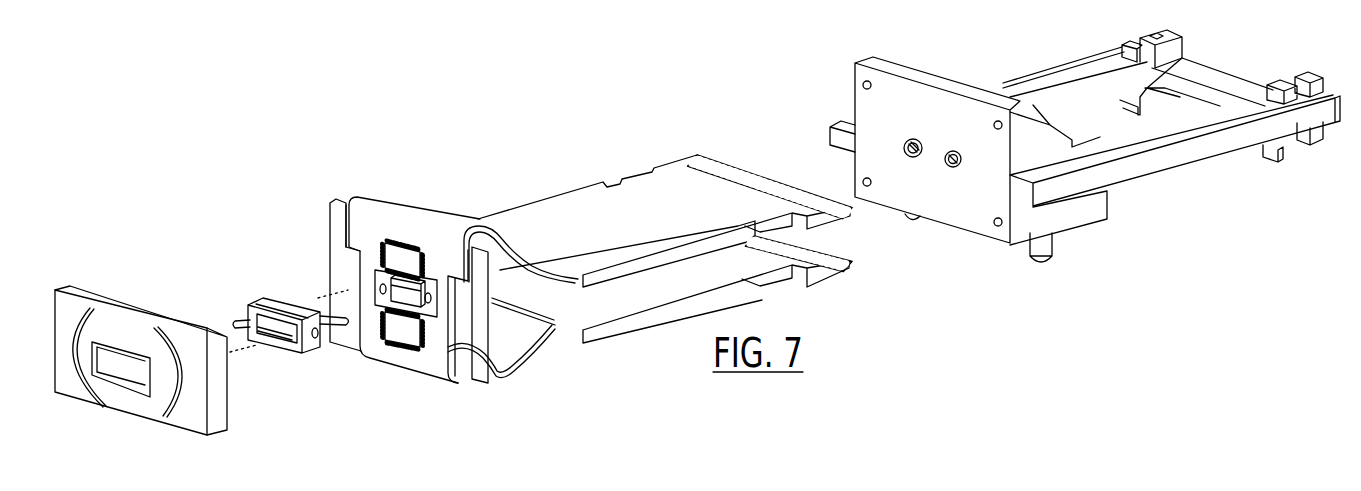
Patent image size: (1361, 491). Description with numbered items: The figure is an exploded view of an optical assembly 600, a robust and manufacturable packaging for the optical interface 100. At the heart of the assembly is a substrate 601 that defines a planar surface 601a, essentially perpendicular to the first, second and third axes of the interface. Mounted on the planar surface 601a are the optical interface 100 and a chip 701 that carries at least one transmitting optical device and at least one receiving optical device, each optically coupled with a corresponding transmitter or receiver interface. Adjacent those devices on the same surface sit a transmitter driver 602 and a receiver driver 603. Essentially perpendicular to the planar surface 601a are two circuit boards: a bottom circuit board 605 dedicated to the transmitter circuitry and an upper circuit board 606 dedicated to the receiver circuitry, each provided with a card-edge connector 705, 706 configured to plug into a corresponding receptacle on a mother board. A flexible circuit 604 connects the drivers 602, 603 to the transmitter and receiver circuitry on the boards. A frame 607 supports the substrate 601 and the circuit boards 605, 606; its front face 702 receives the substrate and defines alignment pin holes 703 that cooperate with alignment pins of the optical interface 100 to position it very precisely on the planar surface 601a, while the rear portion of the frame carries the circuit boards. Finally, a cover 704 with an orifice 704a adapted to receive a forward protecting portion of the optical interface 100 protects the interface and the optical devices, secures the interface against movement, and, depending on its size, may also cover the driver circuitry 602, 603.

The optical assembly 600 is at (688, 87).
The optical interface 100 is at (270, 297).
The substrate 601 is at (328, 232).
The planar surface 601a is at (345, 257).
The transmitter driver 602 is at (403, 333).
The receiver driver 603 is at (400, 255).
The flexible circuit 604 is at (360, 188).
The bottom circuit board 605 is at (700, 282).
The upper circuit board 606 is at (665, 200).
The frame 607 is at (962, 88).
The chip 701 is at (505, 368).
The front face 702 is at (908, 140).
The alignment pin holes 703 is at (952, 168).
The cover 704 is at (57, 310).
The orifice 704a is at (130, 367).
The card-edge connector 705 is at (837, 250).
The card-edge connector 706 is at (722, 160).